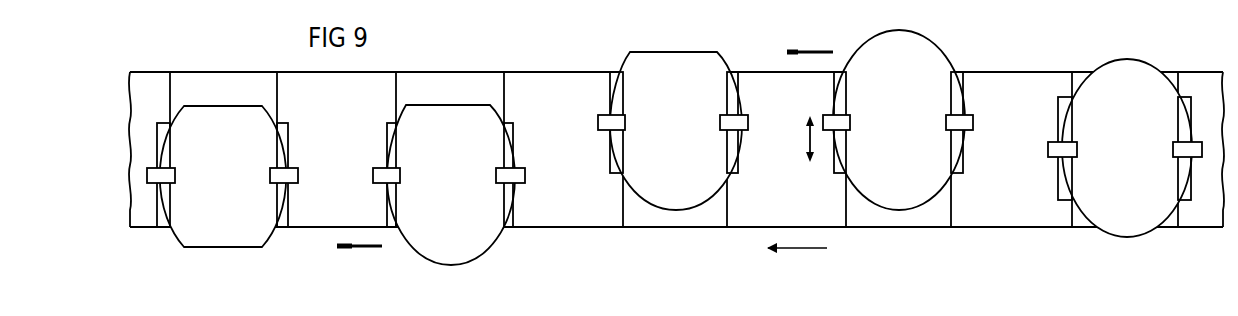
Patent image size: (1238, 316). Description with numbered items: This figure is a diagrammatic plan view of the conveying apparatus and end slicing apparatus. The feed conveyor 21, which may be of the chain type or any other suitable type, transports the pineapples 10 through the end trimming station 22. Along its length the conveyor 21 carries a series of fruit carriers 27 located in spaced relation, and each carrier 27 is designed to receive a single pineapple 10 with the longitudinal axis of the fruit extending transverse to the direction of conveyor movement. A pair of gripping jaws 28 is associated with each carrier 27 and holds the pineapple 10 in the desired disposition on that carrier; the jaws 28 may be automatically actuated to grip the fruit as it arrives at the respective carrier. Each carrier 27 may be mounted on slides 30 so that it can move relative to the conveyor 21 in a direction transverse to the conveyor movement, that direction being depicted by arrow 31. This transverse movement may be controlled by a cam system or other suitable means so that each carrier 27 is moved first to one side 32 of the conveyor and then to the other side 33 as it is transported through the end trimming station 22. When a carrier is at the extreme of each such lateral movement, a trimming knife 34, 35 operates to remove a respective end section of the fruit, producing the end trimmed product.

The pineapple 10 is at (193, 231).
The feed conveyor 21 is at (957, 228).
The end trimming station 22 is at (548, 56).
The fruit carrier 27 is at (960, 181).
The gripping jaws 28 is at (747, 123).
The slides 30 is at (1070, 83).
The arrow 31 is at (810, 142).
The one side of the conveyor 32 is at (461, 72).
The other side of the conveyor 33 is at (592, 227).
The trimming knife 34 is at (790, 50).
The trimming knife 35 is at (344, 243).